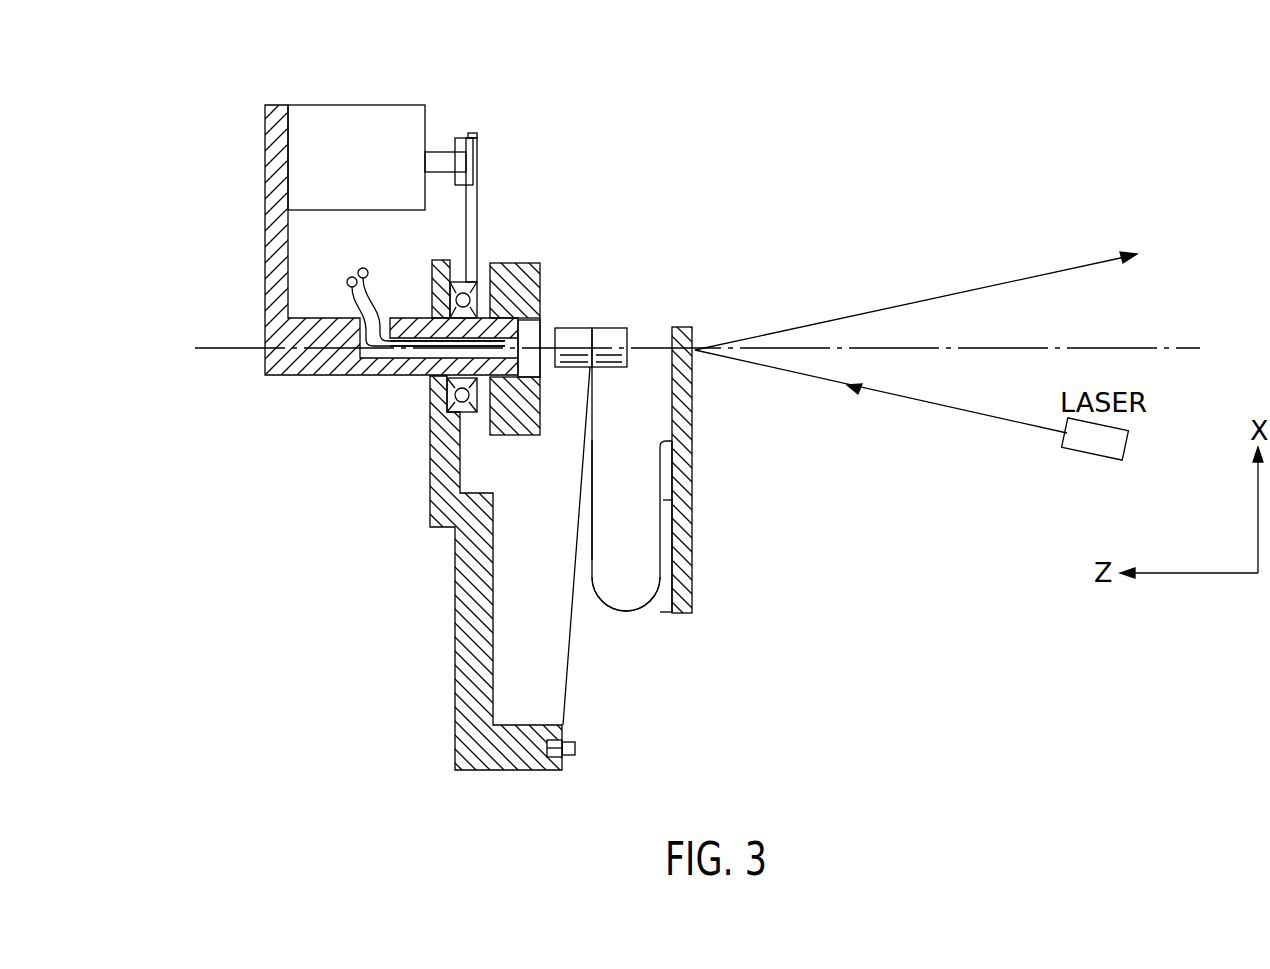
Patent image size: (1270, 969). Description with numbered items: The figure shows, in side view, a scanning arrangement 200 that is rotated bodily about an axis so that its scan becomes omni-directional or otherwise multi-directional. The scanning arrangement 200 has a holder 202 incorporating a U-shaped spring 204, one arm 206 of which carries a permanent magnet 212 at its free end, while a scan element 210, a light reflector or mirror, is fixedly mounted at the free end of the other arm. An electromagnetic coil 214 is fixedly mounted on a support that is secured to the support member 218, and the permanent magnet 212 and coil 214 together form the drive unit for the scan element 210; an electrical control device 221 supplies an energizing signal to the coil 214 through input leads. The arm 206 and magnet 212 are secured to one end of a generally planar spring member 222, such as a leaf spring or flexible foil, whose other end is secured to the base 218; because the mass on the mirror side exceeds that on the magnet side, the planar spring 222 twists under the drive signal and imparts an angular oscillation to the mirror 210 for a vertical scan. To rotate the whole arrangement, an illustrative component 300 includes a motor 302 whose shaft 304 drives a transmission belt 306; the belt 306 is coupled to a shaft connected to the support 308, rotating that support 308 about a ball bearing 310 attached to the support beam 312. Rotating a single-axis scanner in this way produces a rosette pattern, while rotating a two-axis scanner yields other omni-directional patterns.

The scanning arrangement 200 is at (542, 523).
The holder 202 is at (594, 432).
The U-shaped spring 204 is at (630, 612).
The arm 206 is at (590, 548).
The scan element 210 is at (693, 502).
The permanent magnet 212 is at (600, 330).
The electromagnetic coil 214 is at (542, 267).
The support member 218 is at (477, 772).
The electrical control device 221 is at (378, 253).
The planar spring member 222 is at (582, 475).
The component 300 is at (433, 206).
The motor 302 is at (322, 105).
The shaft 304 is at (438, 150).
The transmission belt 306 is at (477, 193).
The support 308 is at (462, 263).
The ball bearing 310 is at (478, 280).
The support beam 312 is at (428, 471).